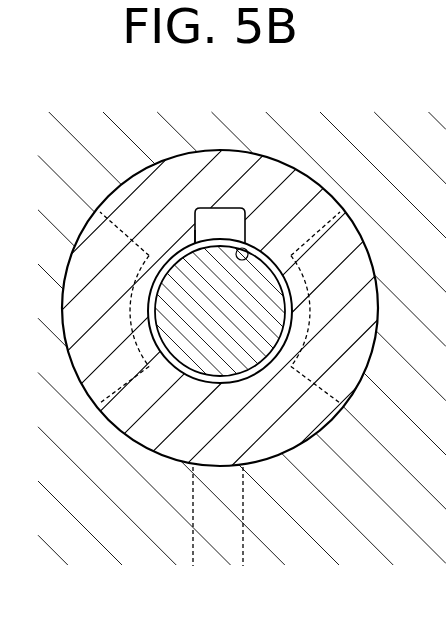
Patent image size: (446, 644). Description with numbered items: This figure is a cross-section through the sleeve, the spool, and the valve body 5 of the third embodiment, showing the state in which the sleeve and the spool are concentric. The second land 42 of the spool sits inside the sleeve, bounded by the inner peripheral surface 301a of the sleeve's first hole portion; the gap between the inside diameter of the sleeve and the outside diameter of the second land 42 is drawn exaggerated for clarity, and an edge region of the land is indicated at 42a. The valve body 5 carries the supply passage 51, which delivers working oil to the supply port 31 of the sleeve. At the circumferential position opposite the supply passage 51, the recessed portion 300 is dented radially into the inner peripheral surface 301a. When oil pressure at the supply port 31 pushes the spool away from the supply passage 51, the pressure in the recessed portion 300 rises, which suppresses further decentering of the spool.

The valve body 5 is at (102, 525).
The supply port 31 is at (270, 452).
The supply passage 51 is at (213, 523).
The second land 42 is at (238, 320).
The shaft edge portion 42a is at (195, 237).
The recessed portion 300 is at (227, 219).
The inner peripheral surface 301a is at (249, 250).